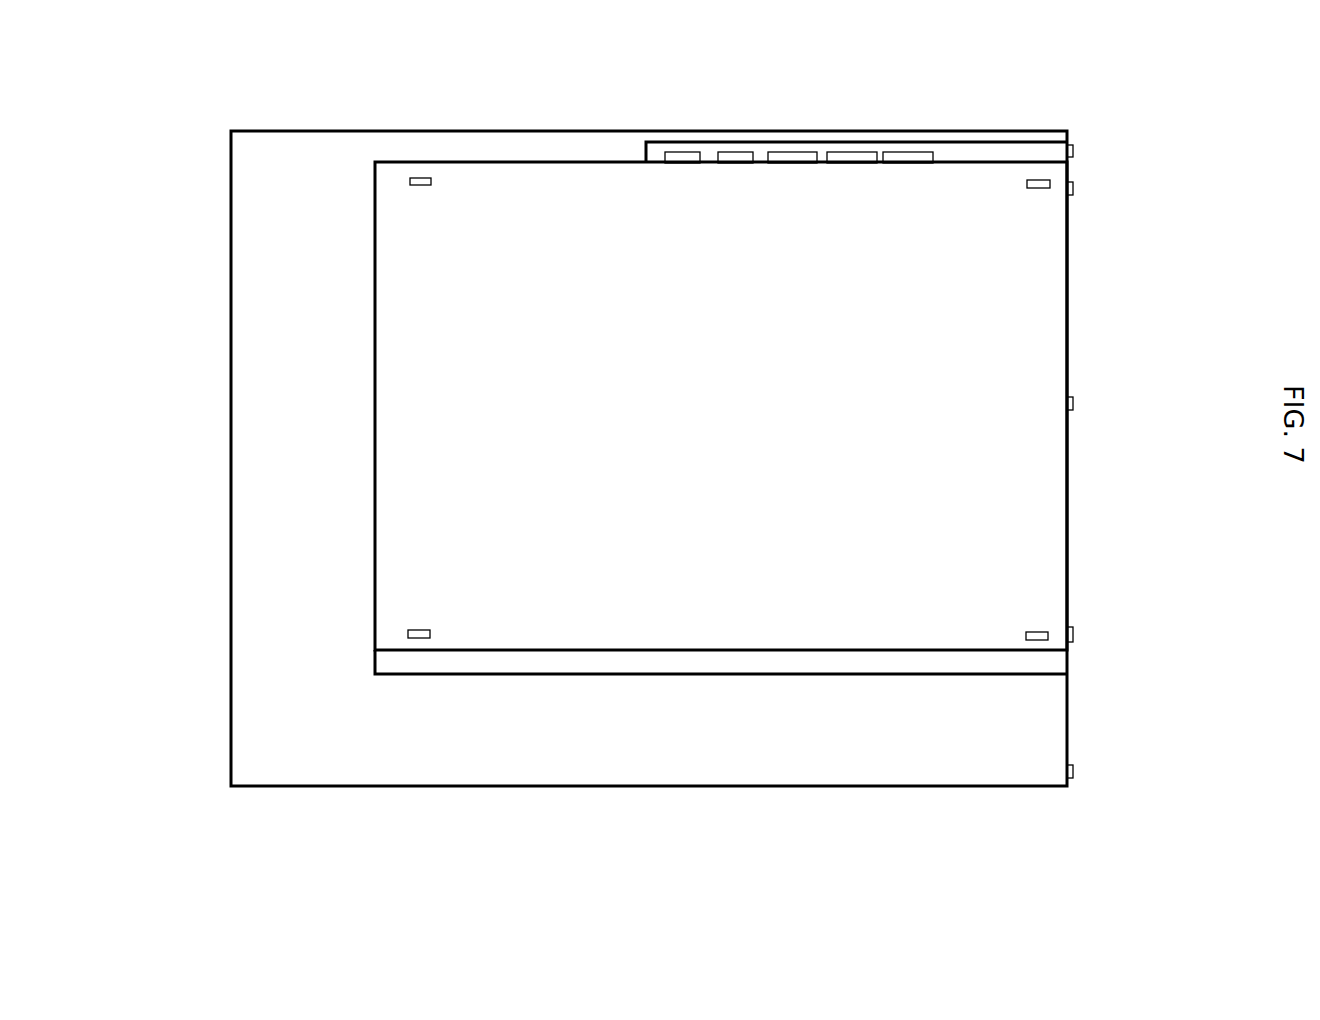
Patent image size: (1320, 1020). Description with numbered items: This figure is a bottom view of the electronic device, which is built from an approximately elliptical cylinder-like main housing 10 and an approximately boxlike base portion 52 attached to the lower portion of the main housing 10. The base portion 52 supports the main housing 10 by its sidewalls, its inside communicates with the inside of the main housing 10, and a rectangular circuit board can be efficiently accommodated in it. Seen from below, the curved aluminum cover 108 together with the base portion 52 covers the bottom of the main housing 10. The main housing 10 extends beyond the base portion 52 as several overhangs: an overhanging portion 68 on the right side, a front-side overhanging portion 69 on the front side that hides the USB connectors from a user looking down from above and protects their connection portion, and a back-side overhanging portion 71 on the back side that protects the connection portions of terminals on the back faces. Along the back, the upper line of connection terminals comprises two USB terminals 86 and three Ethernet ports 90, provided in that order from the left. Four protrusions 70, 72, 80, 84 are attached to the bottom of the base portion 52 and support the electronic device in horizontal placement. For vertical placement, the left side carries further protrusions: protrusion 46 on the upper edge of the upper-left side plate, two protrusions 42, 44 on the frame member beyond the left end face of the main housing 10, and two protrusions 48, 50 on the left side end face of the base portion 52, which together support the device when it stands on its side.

The main housing 10 is at (755, 760).
The base portion 52 is at (885, 595).
The back-side overhanging portion 71 is at (1100, 130).
The USB terminals 86 is at (746, 152).
The Ethernet ports 90 is at (910, 152).
The protrusion 44 is at (1072, 145).
The protrusion 50 is at (1073, 188).
The protrusion 46 is at (1073, 400).
The protrusion 48 is at (1073, 632).
The protrusion 42 is at (1070, 778).
The protrusion 84 is at (417, 185).
The protrusion 80 is at (1037, 188).
The protrusion 70 is at (418, 630).
The protrusion 72 is at (1033, 632).
The aluminum cover 108 is at (290, 618).
The overhanging portion 68 is at (377, 100).
The front-side overhanging portion 69 is at (1108, 677).